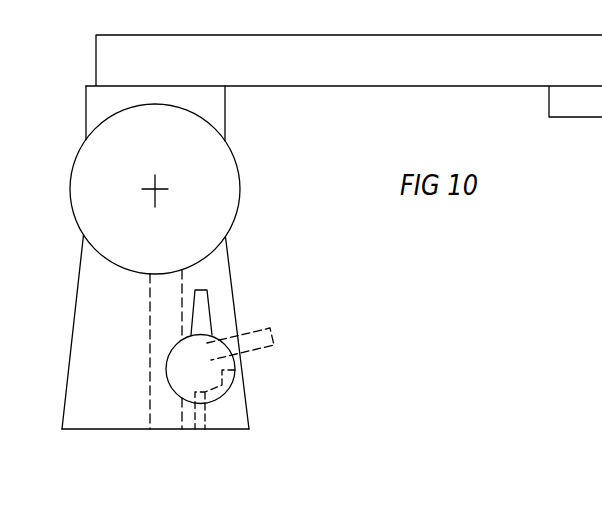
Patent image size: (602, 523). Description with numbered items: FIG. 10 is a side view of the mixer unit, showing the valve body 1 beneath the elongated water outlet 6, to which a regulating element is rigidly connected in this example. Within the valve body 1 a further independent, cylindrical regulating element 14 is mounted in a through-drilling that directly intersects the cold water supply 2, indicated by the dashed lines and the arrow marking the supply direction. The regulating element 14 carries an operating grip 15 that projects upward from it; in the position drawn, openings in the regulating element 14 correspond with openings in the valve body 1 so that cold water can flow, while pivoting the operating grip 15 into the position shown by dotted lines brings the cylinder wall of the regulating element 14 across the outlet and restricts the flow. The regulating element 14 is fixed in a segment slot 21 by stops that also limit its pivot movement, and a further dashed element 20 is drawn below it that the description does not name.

The valve body 1 is at (127, 415).
The cold water supply 2 is at (163, 431).
The water outlet 6 is at (406, 78).
The regulating element 14 is at (208, 347).
The operating grip 15 is at (202, 313).
The pin 20 is at (202, 405).
The segment slot 21 is at (225, 385).